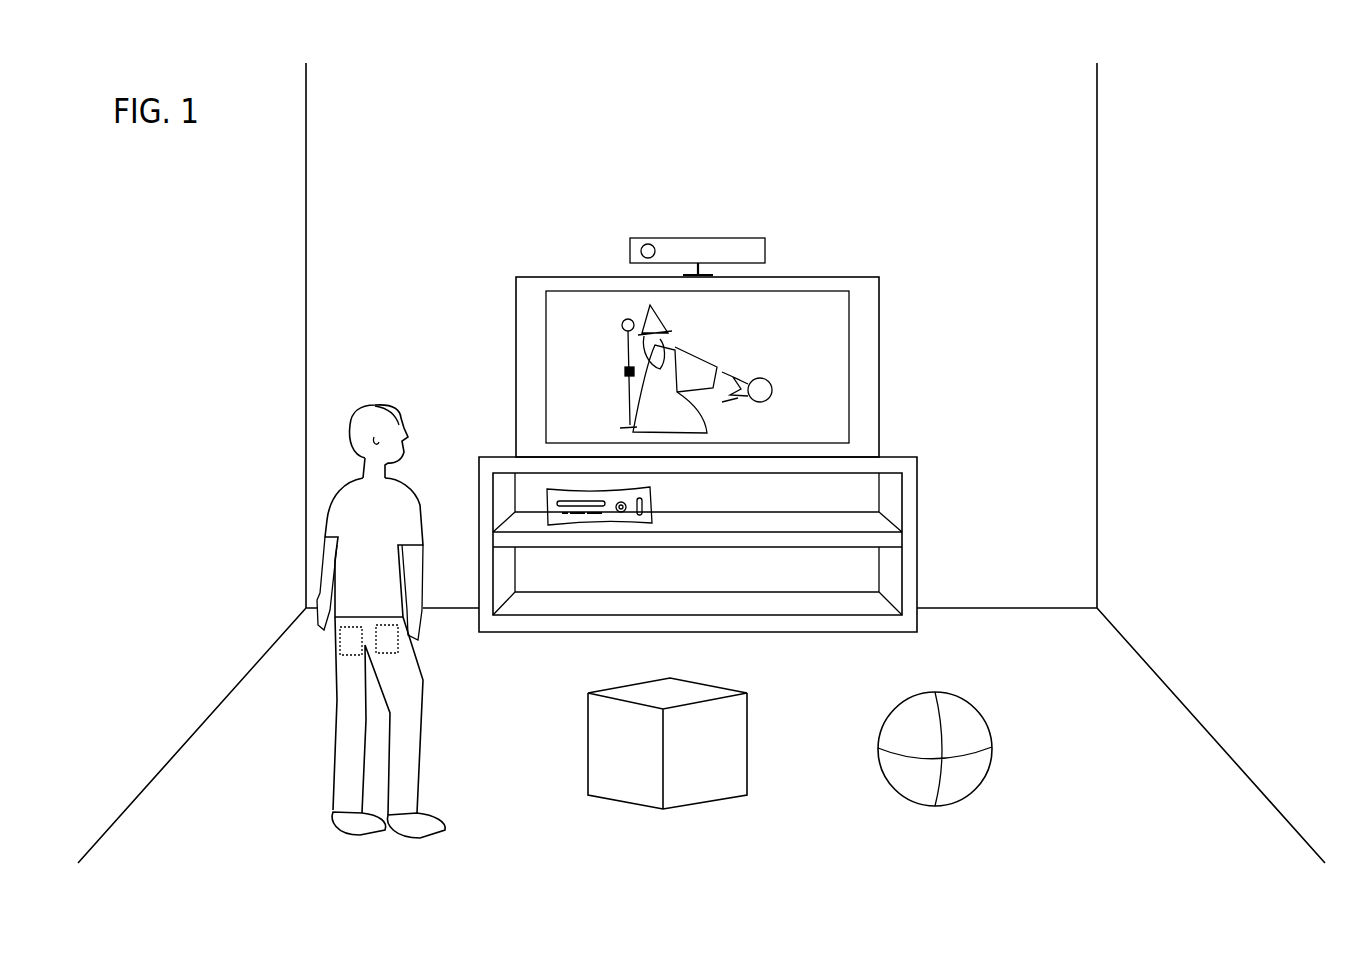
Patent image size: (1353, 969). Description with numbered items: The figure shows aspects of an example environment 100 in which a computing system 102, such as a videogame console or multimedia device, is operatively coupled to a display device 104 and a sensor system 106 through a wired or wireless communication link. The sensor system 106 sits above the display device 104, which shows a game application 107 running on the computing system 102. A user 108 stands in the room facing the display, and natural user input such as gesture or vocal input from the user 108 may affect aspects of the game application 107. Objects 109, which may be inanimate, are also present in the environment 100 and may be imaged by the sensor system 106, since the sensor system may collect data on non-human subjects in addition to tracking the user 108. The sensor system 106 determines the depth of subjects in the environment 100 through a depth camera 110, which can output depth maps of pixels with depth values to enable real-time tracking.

The environment 100 is at (697, 157).
The computing system 102 is at (652, 522).
The display device 104 is at (879, 277).
The sensor system 106 is at (727, 225).
The game application 107 is at (759, 352).
The user 108 is at (375, 390).
The objects 109 is at (850, 794).
The depth camera 110 is at (630, 249).